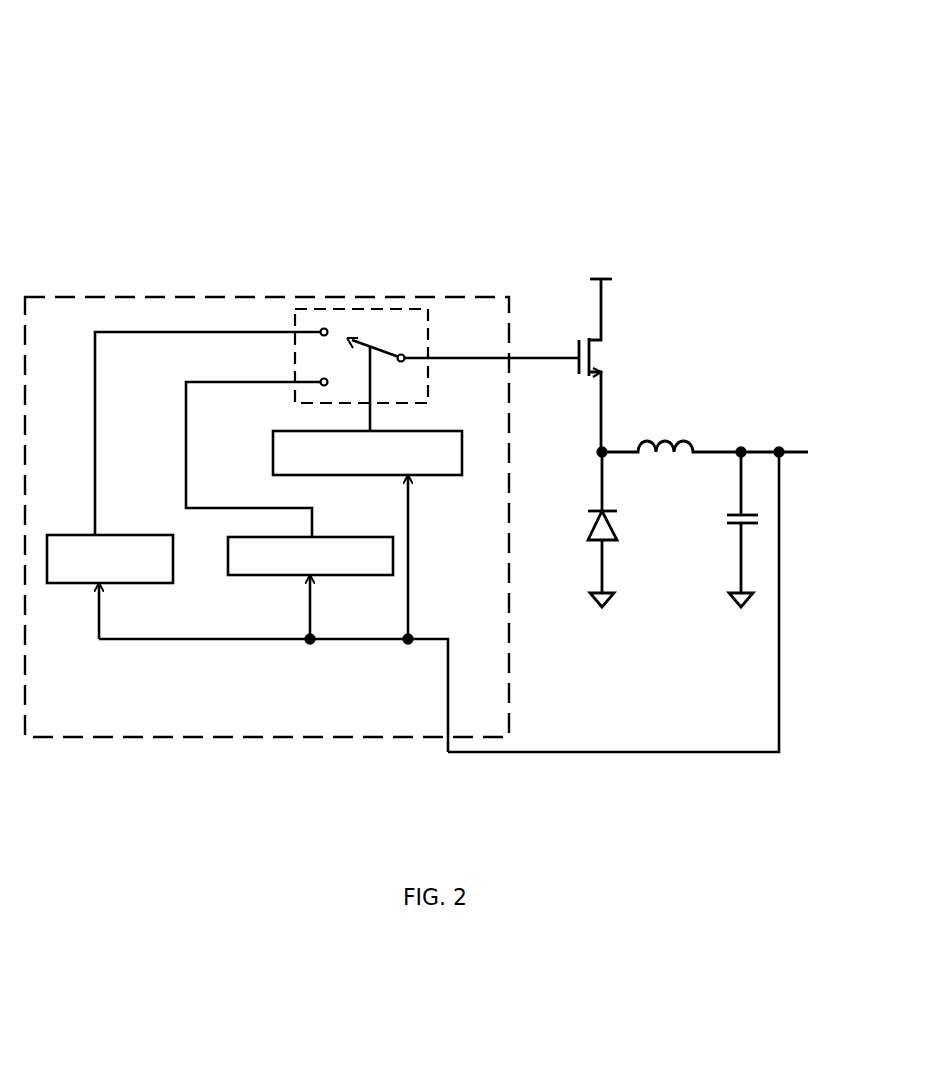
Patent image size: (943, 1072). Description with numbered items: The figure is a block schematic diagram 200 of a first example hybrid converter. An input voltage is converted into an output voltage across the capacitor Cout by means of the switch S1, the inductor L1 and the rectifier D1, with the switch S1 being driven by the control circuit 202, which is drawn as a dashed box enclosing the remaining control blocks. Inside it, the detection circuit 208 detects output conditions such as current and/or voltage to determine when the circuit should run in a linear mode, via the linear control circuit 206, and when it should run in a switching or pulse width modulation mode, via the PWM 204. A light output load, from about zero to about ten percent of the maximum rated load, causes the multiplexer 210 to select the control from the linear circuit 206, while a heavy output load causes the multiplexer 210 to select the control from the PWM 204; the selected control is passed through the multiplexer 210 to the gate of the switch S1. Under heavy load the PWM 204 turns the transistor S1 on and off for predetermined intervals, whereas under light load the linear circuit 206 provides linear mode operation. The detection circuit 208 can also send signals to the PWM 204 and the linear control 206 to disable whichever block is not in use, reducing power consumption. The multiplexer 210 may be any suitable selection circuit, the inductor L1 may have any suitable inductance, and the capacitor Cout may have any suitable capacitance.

The block schematic diagram 200 is at (706, 31).
The control circuit 202 is at (140, 722).
The PWM 204 is at (165, 571).
The linear control circuit 206 is at (367, 567).
The detection circuit 208 is at (437, 464).
The multiplexer 210 is at (363, 322).
The switch S1 is at (595, 353).
The inductor L1 is at (660, 445).
The rectifier D1 is at (592, 523).
The capacitor Cout is at (723, 522).